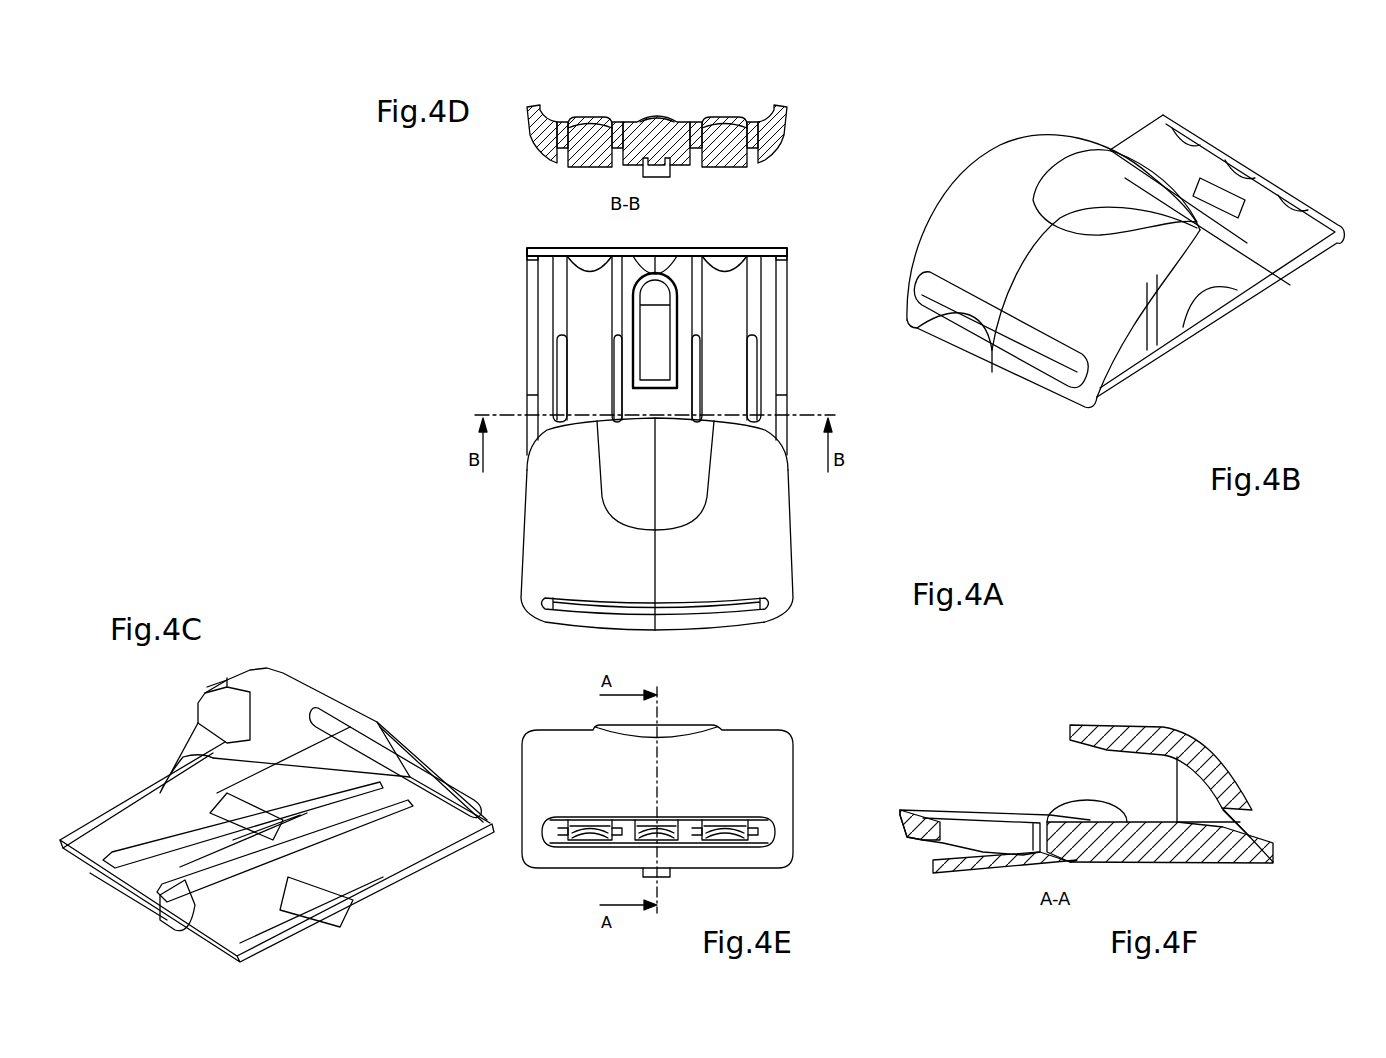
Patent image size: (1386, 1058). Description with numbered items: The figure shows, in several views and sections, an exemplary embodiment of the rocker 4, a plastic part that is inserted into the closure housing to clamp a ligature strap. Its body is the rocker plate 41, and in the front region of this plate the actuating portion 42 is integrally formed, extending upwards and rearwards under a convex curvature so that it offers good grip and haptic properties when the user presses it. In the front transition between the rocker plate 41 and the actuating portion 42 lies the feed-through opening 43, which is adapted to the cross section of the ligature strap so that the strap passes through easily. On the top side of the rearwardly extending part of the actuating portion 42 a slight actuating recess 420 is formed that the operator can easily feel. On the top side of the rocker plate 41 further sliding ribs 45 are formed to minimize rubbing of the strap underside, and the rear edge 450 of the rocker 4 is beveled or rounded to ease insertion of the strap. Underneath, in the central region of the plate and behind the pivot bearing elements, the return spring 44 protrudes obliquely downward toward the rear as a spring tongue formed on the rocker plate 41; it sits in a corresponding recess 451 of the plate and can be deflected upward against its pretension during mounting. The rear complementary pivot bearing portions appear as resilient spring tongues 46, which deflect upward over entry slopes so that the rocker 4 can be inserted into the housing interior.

In FIG. 4B, the rocker 4 is at (965, 112).
In FIG. 4F, the rocker plate 41 is at (1160, 880).
In FIG. 4B, the rocker plate 41 is at (1182, 357).
In FIG. 4C, the rocker plate 41 is at (112, 807).
In FIG. 4A, the actuating portion 42 is at (760, 535).
In FIG. 4E, the actuating portion 42 is at (745, 726).
In FIG. 4F, the actuating portion 42 is at (1152, 722).
In FIG. 4B, the actuating portion 42 is at (958, 222).
In FIG. 4C, the actuating portion 42 is at (297, 688).
In FIG. 4A, the feed-through opening 43 is at (722, 607).
In FIG. 4E, the feed-through opening 43 is at (690, 827).
In FIG. 4F, the feed-through opening 43 is at (1245, 828).
In FIG. 4B, the feed-through opening 43 is at (1043, 362).
In FIG. 4C, the feed-through opening 43 is at (357, 738).
In FIG. 4D, the return spring 44 is at (648, 171).
In FIG. 4F, the return spring 44 is at (950, 870).
In FIG. 4C, the return spring 44 is at (163, 918).
In FIG. 4A, the sliding ribs 45 is at (560, 312).
In FIG. 4C, the spring tongues 46 is at (303, 900).
In FIG. 4A, the actuating recess 420 is at (615, 483).
In FIG. 4B, the actuating recess 420 is at (1082, 178).
In FIG. 4A, the rear edge 450 is at (567, 256).
In FIG. 4F, the rear edge 450 is at (900, 826).
In FIG. 4A, the recess 451 is at (680, 312).